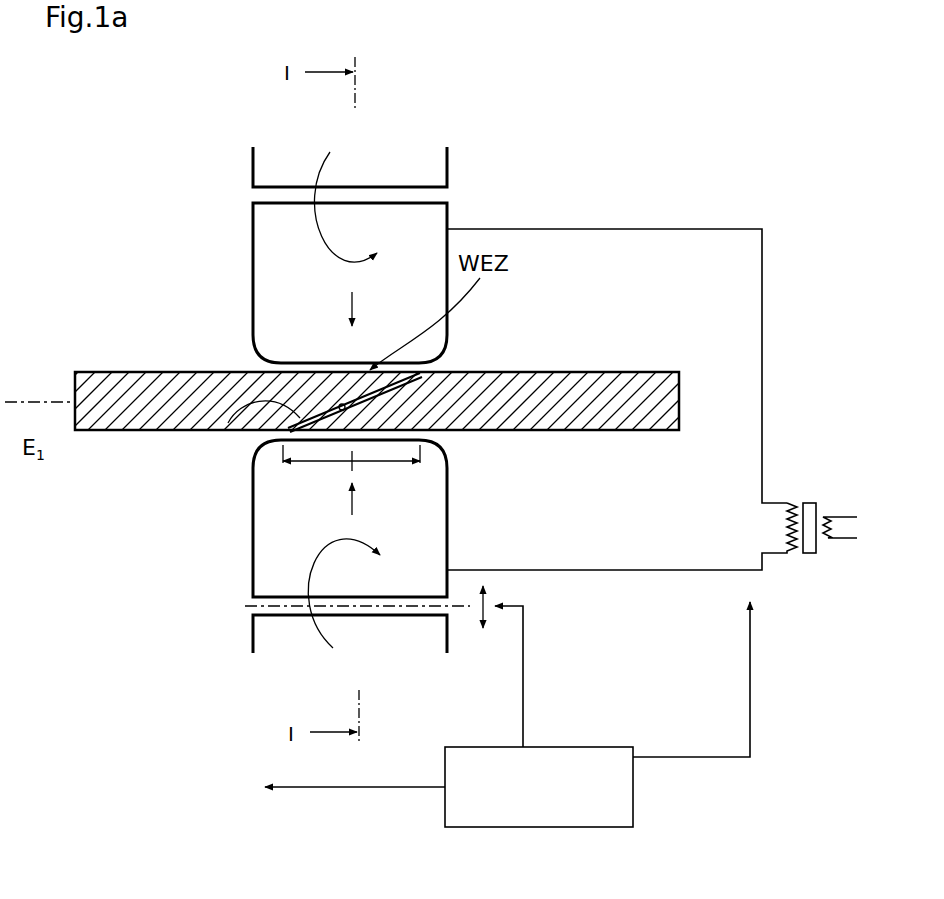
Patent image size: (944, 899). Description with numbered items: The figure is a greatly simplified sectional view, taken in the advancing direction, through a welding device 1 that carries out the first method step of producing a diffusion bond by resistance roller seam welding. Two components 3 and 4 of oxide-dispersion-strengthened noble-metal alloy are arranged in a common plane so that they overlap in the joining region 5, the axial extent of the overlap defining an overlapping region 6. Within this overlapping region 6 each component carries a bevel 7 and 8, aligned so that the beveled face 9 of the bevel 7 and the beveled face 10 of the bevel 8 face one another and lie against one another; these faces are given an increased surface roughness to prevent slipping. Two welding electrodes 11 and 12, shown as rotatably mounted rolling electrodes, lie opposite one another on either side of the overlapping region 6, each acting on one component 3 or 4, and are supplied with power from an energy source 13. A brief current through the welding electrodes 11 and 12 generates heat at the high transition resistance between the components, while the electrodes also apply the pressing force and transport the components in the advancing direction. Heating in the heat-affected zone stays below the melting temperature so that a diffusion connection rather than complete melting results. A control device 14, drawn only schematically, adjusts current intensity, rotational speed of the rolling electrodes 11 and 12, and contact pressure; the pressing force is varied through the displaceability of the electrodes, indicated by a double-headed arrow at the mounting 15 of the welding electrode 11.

The welding device 1 is at (541, 185).
The component 3 is at (161, 410).
The component 4 is at (563, 415).
The joining region 5 is at (368, 383).
The overlapping region 6 is at (387, 372).
The bevel 7 is at (228, 423).
The bevel 8 is at (315, 405).
The beveled face 9 is at (290, 425).
The beveled face 10 is at (350, 387).
The welding electrode 11 is at (283, 553).
The welding electrode 12 is at (287, 166).
The energy source 13 is at (808, 478).
The control device 14 is at (550, 803).
The mounting 15 is at (250, 606).